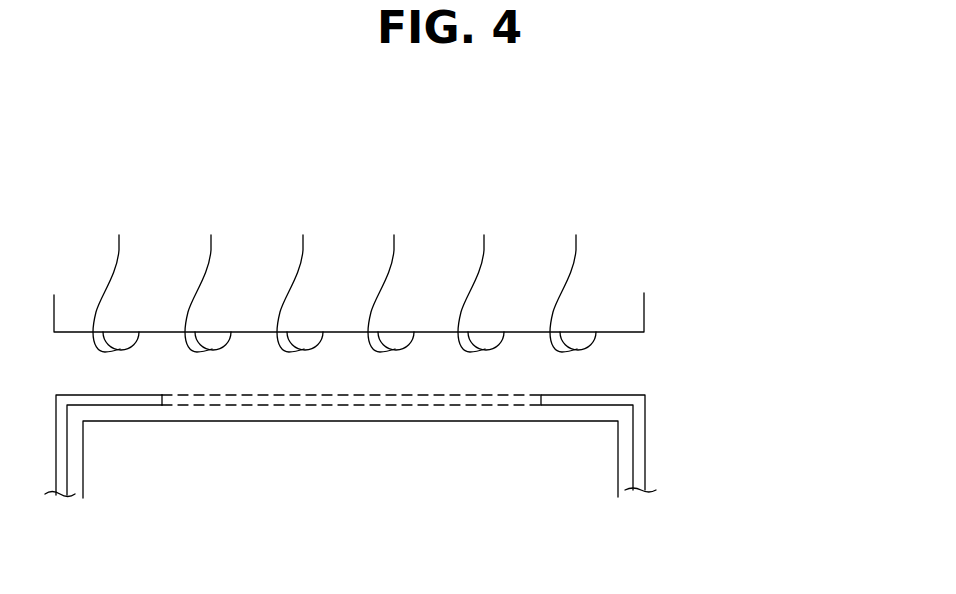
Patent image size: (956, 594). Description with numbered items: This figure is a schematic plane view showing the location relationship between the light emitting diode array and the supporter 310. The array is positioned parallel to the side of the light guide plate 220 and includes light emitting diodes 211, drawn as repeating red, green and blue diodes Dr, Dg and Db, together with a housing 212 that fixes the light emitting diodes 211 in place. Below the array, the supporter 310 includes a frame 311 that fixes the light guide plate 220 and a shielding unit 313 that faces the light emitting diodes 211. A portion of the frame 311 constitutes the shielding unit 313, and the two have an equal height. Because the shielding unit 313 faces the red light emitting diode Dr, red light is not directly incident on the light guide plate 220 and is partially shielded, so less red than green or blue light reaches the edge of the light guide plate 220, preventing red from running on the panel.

The light emitting diode 211 is at (595, 190).
The housing 212 is at (343, 331).
The light guide plate 220 is at (348, 421).
The supporter 310 is at (777, 370).
The frame 311 is at (640, 417).
The shielding unit 313 is at (603, 394).